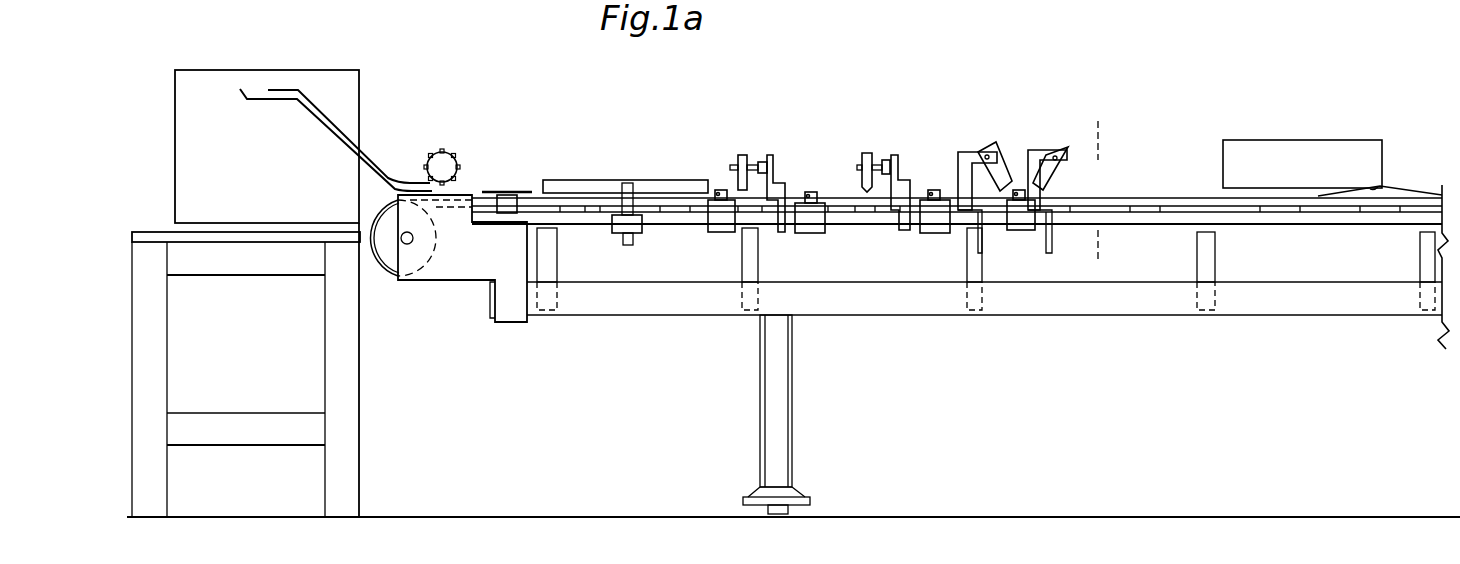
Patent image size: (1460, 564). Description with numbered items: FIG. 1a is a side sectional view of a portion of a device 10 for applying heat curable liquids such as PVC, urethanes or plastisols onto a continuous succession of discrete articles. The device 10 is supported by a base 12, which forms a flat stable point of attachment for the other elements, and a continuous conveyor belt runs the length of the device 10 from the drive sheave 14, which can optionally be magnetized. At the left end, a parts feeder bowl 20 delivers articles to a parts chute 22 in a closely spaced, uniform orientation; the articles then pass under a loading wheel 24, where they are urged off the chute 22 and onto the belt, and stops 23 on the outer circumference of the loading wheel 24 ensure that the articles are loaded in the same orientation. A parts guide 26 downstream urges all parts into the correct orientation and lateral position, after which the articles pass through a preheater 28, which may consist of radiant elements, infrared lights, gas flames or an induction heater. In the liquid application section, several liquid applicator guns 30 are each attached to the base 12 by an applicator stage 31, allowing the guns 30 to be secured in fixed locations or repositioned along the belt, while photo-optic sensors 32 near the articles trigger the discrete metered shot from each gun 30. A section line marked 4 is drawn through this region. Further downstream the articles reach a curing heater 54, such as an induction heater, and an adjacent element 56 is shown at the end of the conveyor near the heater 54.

The device 10 is at (1143, 132).
The base 12 is at (936, 305).
The drive sheave 14 is at (386, 263).
The parts feeder bowl 20 is at (342, 75).
The parts chute 22 is at (365, 150).
The stops 23 is at (428, 153).
The loading wheel 24 is at (439, 148).
The parts guide 26 is at (513, 191).
The preheater 28 is at (652, 182).
The liquid applicator gun 30 is at (740, 156).
The applicator stage 31 is at (786, 188).
The photo-optic sensor 32 is at (707, 232).
The curing heater 54 is at (1287, 147).
The ramp 56 is at (1400, 184).
The section line 4- 4 is at (1075, 121).